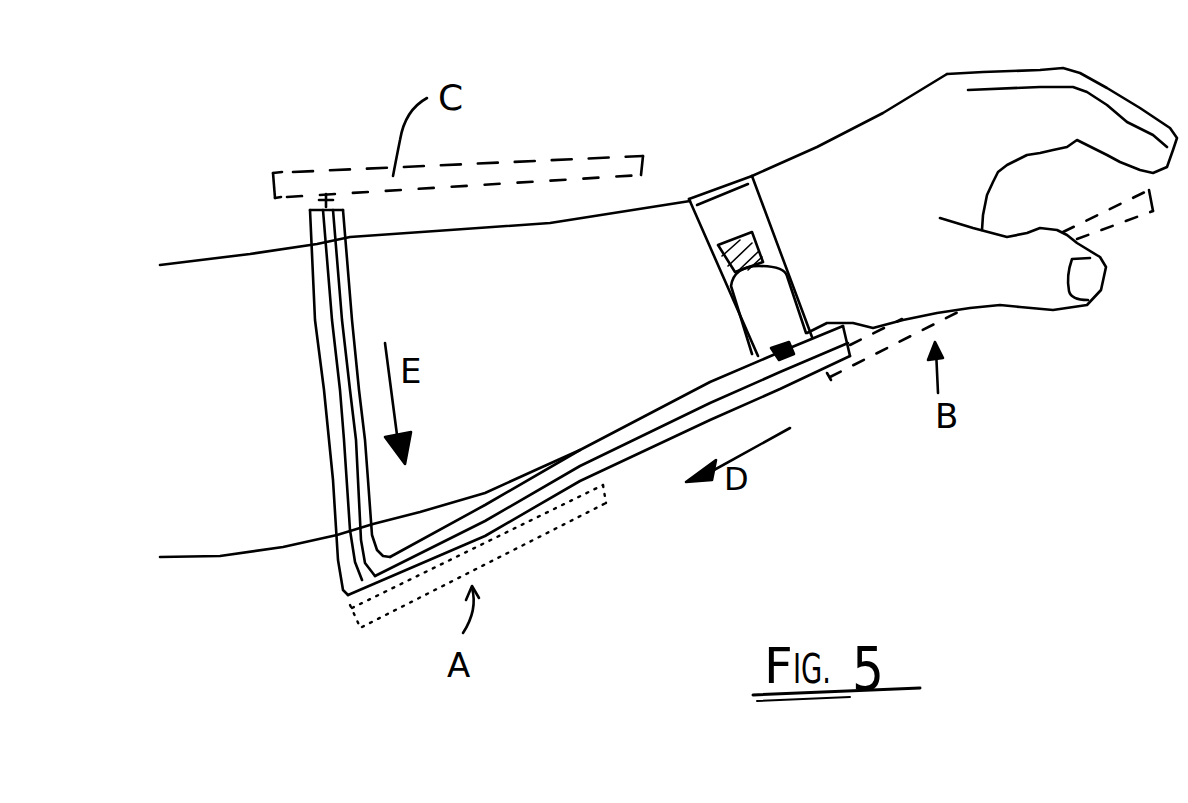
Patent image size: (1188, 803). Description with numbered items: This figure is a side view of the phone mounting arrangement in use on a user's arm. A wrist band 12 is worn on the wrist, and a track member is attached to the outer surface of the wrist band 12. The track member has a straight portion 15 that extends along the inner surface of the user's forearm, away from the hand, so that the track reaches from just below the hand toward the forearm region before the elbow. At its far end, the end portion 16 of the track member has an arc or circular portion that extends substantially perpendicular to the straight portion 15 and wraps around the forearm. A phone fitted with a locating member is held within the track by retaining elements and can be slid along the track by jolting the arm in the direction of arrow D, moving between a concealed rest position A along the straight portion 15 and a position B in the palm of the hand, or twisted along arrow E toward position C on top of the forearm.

The wrist band 12 is at (743, 200).
The straight portion 15 is at (733, 403).
The end portion 16 is at (313, 418).